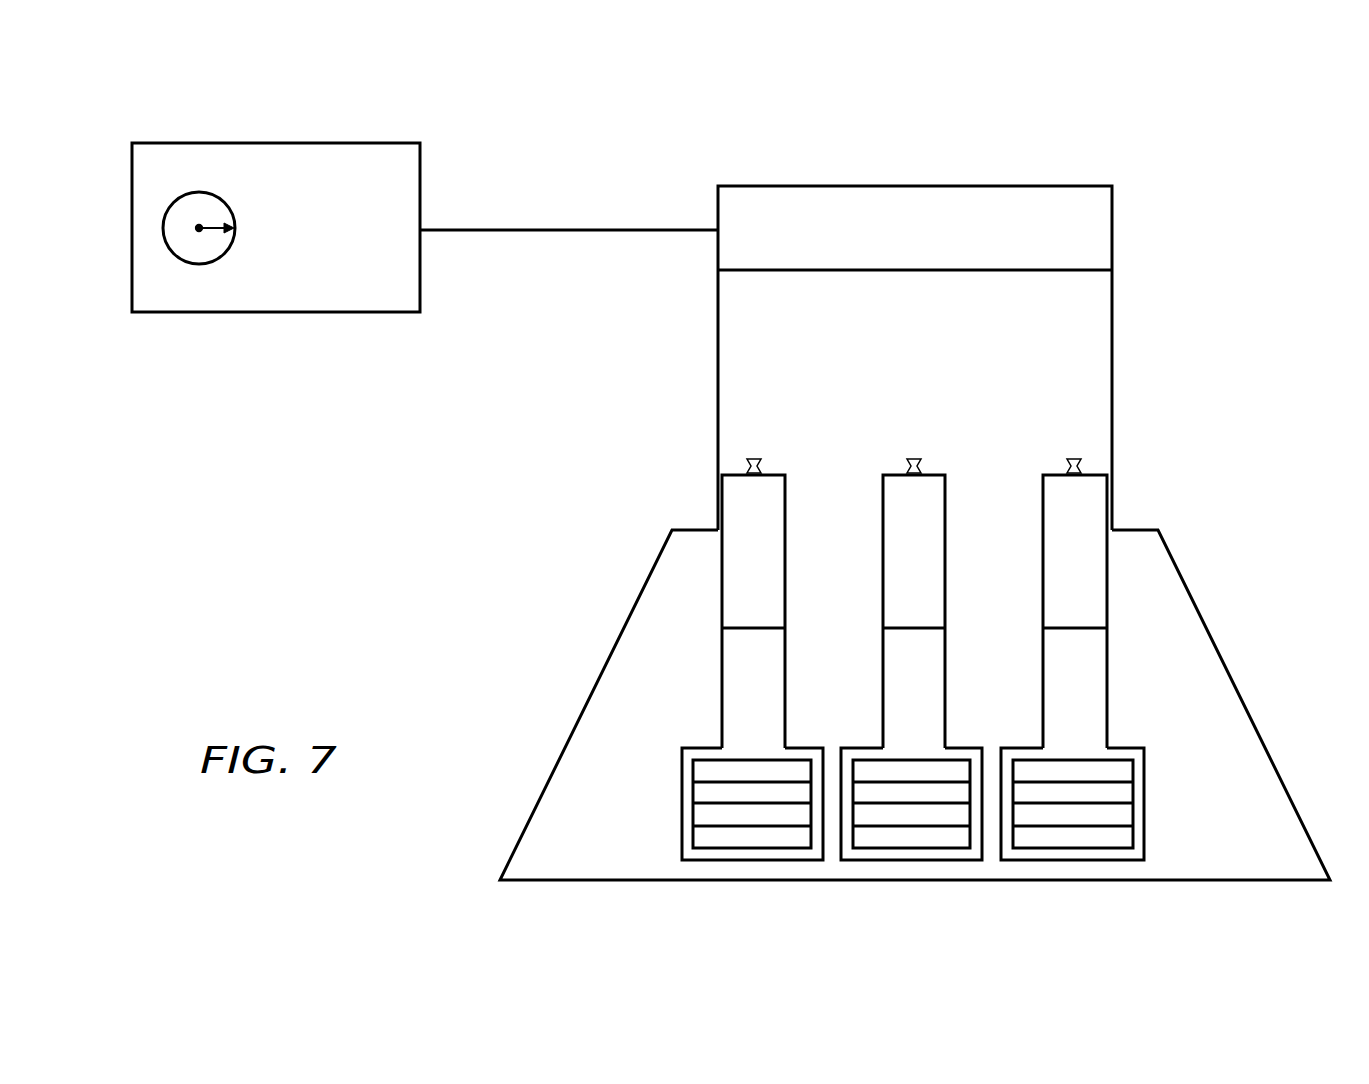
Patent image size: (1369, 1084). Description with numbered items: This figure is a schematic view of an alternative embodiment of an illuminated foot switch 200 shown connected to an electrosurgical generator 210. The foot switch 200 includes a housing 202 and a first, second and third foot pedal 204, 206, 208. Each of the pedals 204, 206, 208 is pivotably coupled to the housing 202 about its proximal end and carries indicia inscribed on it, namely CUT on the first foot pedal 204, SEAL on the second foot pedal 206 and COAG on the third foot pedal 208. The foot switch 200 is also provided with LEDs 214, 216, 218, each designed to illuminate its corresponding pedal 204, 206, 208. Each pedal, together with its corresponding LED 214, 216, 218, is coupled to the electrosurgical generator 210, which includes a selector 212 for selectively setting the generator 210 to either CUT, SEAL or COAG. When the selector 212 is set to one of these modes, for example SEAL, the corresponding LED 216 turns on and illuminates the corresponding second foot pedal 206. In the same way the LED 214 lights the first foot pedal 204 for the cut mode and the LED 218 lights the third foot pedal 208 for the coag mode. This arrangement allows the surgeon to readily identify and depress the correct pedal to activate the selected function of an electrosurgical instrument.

The illuminated foot switch 200 is at (703, 152).
The housing 202 is at (1087, 335).
The first foot pedal 204 is at (745, 844).
The second foot pedal 206 is at (927, 840).
The third foot pedal 208 is at (1115, 840).
The electrosurgical generator 210 is at (358, 157).
The selector 212 is at (167, 226).
The LED 214 is at (755, 453).
The LED 216 is at (914, 453).
The LED 218 is at (1073, 453).